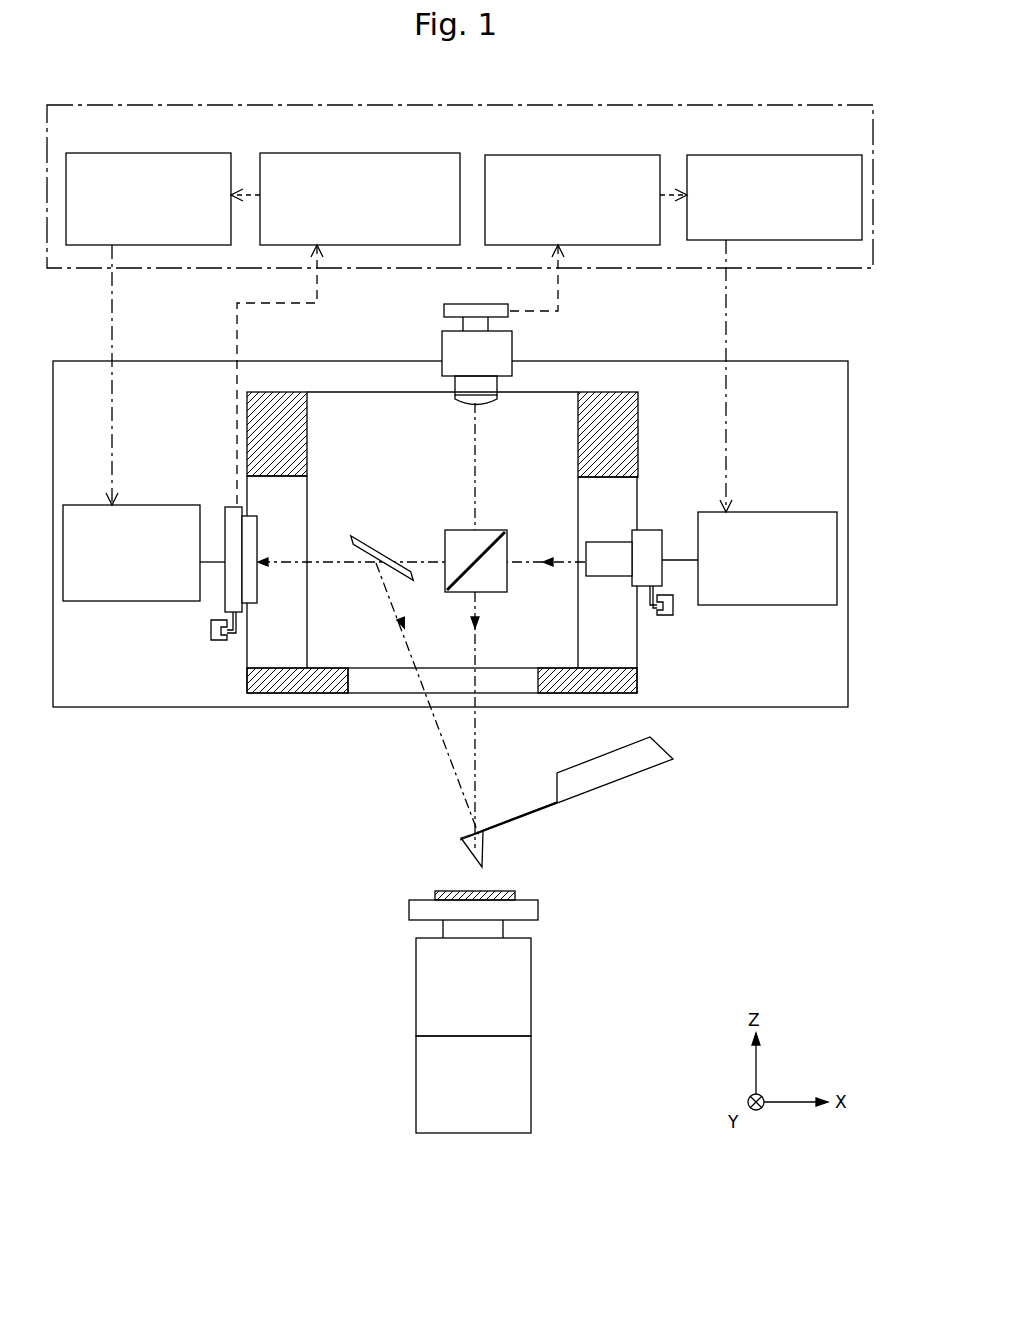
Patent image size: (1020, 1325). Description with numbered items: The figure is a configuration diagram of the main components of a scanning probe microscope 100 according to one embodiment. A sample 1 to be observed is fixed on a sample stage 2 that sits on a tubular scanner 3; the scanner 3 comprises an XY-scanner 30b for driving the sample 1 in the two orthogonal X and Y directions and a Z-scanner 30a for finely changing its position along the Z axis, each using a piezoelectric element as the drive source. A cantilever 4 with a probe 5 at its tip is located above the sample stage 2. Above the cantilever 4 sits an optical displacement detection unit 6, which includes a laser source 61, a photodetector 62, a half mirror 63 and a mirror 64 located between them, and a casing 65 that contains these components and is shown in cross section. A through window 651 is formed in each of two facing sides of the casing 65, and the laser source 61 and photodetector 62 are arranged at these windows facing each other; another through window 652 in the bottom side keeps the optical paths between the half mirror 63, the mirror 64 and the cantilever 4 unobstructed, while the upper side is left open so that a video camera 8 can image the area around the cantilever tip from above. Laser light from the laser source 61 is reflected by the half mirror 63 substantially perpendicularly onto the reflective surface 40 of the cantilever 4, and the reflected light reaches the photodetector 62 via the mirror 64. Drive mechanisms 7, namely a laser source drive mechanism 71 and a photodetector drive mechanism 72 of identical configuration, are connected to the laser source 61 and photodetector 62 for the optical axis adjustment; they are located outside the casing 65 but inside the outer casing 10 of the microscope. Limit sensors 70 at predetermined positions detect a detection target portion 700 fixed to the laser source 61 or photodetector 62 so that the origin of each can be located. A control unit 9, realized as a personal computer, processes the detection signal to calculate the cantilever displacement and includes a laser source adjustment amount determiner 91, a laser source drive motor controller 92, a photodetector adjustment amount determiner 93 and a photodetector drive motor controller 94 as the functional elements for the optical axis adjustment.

The scanning probe microscope 100 is at (285, 868).
The sample 1 is at (515, 893).
The sample stage 2 is at (538, 910).
The scanner 3 is at (520, 1026).
The Z-scanner 30a is at (531, 1002).
The XY-scanner 30b is at (503, 1084).
The cantilever 4 is at (653, 770).
The reflective surface 40 is at (498, 827).
The probe 5 is at (468, 847).
The optical displacement detection unit 6 is at (440, 612).
The laser source 61 is at (662, 540).
The photodetector 62 is at (225, 515).
The half mirror 63 is at (507, 550).
The mirror 64 is at (375, 545).
The casing 65 is at (637, 675).
The through window 651 is at (300, 478).
The through window 652 is at (349, 681).
The drive mechanism 7 is at (450, 577).
The laser source drive mechanism 71 is at (753, 605).
The photodetector drive mechanism 72 is at (112, 602).
The limit sensor 70 is at (210, 637).
The detection target portion 700 is at (233, 633).
The video camera 8 is at (442, 343).
The control unit 9 is at (713, 105).
The laser source adjustment amount determiner 91 is at (596, 155).
The laser source drive motor controller 92 is at (797, 155).
The photodetector adjustment amount determiner 93 is at (383, 153).
The photodetector drive motor controller 94 is at (183, 153).
The outer casing 10 is at (159, 710).